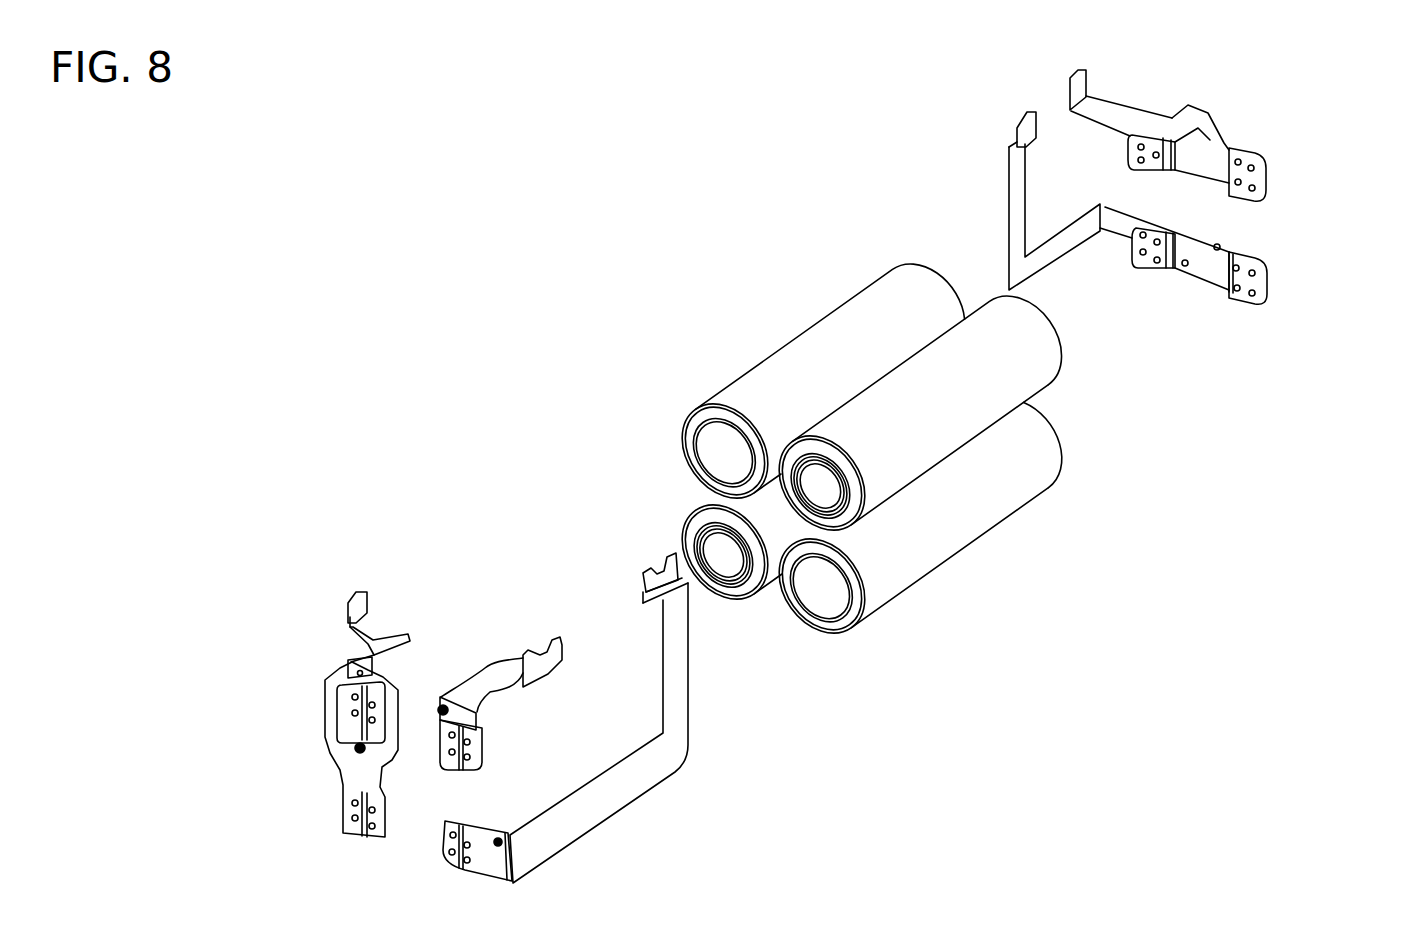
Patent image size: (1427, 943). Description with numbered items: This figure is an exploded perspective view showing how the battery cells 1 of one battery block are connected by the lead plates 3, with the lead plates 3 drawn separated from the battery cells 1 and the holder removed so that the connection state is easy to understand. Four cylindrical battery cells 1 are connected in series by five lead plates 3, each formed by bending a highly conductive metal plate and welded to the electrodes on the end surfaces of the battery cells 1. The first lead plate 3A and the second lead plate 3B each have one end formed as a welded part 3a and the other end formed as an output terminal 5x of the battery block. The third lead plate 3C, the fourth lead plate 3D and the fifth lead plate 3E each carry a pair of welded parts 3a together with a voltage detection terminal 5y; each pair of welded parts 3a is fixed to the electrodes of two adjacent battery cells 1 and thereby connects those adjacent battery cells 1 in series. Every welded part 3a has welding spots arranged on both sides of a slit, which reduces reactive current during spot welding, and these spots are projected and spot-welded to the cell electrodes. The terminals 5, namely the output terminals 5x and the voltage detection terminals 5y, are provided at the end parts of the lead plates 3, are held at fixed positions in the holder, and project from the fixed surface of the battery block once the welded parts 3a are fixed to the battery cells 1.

The battery cell 1 is at (810, 357).
The lead plate 3 is at (832, 486).
The first lead plate 3A is at (532, 722).
The second lead plate 3B is at (620, 828).
The third lead plate 3C is at (398, 850).
The fourth lead plate 3D is at (1280, 134).
The fifth lead plate 3E is at (1292, 258).
The welded part 3a is at (1228, 157).
The holder 5 is at (760, 470).
The output terminal 5x is at (545, 637).
The voltage detection terminal 5y is at (1076, 78).